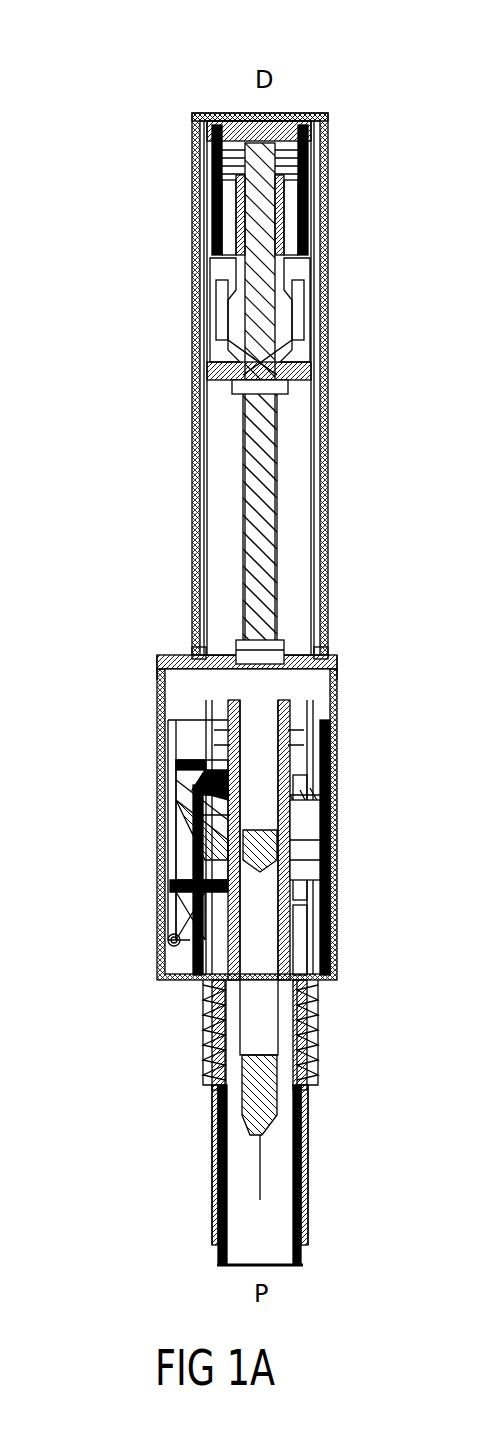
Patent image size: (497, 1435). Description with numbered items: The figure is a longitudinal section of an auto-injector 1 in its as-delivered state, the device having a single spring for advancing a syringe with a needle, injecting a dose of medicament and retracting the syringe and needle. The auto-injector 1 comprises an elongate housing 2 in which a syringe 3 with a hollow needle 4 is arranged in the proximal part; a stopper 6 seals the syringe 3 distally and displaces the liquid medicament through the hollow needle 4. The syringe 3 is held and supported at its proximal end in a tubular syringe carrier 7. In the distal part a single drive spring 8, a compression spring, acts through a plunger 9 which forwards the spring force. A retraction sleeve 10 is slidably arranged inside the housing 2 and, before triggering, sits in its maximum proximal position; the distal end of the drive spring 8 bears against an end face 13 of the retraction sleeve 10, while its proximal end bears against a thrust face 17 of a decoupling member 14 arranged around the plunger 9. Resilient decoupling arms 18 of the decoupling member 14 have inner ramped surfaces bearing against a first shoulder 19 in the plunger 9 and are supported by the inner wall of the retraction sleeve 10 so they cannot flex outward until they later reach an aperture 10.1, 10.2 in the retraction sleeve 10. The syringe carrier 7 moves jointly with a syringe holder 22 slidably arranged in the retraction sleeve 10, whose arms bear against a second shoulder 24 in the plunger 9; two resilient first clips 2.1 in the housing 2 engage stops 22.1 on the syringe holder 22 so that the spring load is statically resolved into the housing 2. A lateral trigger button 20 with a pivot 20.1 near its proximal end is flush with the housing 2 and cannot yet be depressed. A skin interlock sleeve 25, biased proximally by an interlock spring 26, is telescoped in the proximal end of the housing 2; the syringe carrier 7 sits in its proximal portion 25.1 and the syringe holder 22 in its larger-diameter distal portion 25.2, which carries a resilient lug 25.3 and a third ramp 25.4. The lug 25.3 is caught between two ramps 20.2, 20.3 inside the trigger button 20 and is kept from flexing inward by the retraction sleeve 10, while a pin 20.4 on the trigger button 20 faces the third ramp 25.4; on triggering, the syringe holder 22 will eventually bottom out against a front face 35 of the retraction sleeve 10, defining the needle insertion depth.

The auto-injector 1 is at (338, 45).
The housing 2 is at (195, 445).
The first clips 2.1 is at (200, 692).
The syringe 3 is at (305, 940).
The hollow needle 4 is at (265, 1152).
The stopper 6 is at (305, 832).
The syringe carrier 7 is at (320, 992).
The drive spring 8 is at (210, 160).
The plunger 9 is at (258, 408).
The retraction sleeve 10 is at (318, 445).
The aperture 10.1 is at (295, 815).
The aperture 10.2 is at (318, 722).
The end face 13 is at (218, 112).
The decoupling member 14 is at (222, 308).
The thrust face 17 is at (210, 250).
The decoupling arms 18 is at (222, 336).
The first shoulder 19 is at (318, 388).
The trigger button 20 is at (165, 785).
The pivot 20.1 is at (170, 942).
The first ramp 20.2 is at (190, 886).
The second ramp 20.3 is at (268, 830).
The pin 20.4 is at (170, 768).
The syringe holder 22 is at (168, 722).
The stops 22.1 is at (196, 668).
The second shoulder 24 is at (242, 652).
The skin interlock sleeve 25 is at (300, 1222).
The proximal portion 25.1 is at (214, 1188).
The distal portion 25.2 is at (180, 926).
The lug 25.3 is at (178, 872).
The third ramp 25.4 is at (196, 822).
The interlock spring 26 is at (207, 1052).
The front face 35 is at (325, 868).